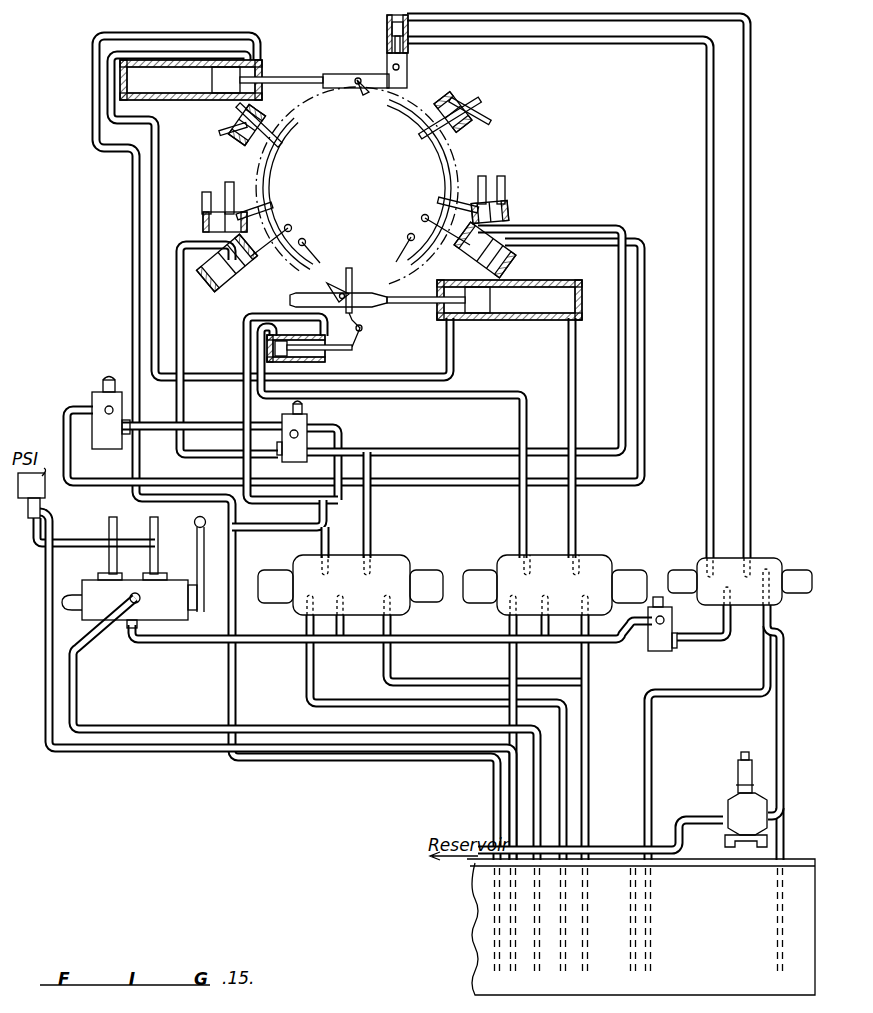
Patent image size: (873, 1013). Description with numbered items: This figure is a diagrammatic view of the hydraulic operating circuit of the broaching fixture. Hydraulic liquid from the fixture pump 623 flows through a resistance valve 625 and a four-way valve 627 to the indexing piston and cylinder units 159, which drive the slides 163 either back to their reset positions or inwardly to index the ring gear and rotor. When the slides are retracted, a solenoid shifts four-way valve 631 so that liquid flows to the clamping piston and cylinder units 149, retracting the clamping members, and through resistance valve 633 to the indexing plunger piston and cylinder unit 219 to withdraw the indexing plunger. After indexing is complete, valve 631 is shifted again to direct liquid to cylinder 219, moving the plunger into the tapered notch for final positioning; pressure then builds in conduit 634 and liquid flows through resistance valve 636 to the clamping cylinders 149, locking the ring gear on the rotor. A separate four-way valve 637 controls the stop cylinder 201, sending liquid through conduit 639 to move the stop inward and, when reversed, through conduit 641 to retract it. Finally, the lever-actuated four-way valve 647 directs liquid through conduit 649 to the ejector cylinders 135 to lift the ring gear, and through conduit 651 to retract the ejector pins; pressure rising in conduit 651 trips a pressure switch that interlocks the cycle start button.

The hydraulic piston and cylinder unit 135 is at (232, 150).
The hydraulic piston and cylinder unit 149 is at (222, 280).
The hydraulic piston and cylinder unit 159 is at (173, 104).
The slide 163 is at (350, 60).
The piston and cylinder unit 201 is at (386, 30).
The piston and cylinder unit 219 is at (325, 355).
The fixture pump 623 is at (728, 802).
The resistance valve 625 is at (664, 654).
The four-way valve 627 is at (589, 556).
The four-way valve 631 is at (404, 562).
The resistance valve 633 is at (280, 456).
The conduit 634 is at (265, 347).
The resistance valve 636 is at (92, 427).
The four-way valve 637 is at (754, 558).
The conduit 639 is at (748, 476).
The conduit 641 is at (704, 484).
The four-way valve 647 is at (82, 596).
The conduit 649 is at (217, 142).
The conduit 651 is at (264, 141).